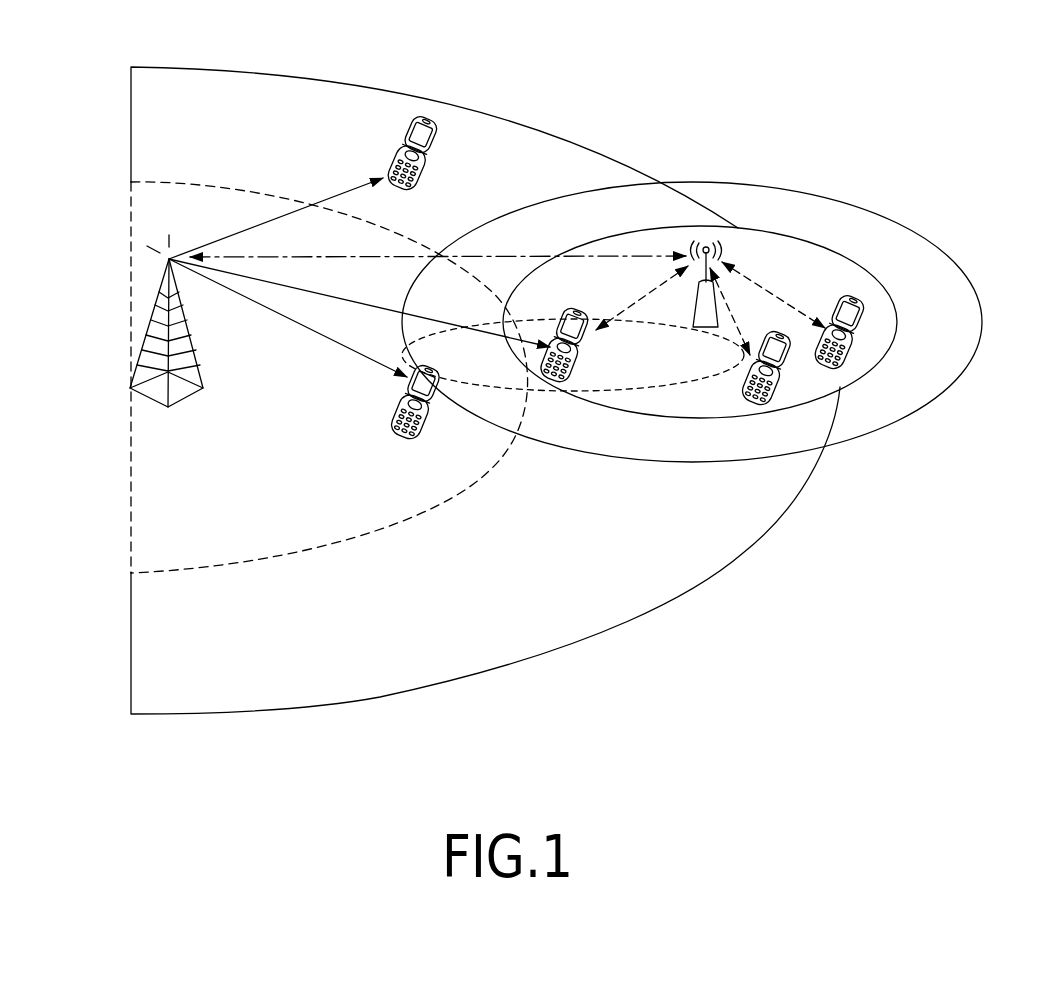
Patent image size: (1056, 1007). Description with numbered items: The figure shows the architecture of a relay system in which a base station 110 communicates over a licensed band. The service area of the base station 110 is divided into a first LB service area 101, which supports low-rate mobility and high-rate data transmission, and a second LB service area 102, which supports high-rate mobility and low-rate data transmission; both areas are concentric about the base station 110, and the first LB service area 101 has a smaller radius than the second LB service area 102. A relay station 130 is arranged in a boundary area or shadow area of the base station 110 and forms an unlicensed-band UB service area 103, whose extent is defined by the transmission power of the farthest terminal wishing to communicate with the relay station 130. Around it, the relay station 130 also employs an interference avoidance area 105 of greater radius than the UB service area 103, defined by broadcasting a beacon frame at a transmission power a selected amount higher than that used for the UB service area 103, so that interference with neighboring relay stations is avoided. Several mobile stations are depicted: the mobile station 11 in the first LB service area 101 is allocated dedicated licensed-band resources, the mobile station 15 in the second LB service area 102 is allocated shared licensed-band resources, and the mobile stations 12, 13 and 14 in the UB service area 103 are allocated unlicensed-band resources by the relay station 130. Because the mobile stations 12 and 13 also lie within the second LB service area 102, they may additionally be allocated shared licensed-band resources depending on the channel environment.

The base station 110 is at (145, 331).
The first LB service area 101 is at (142, 490).
The second LB service area 102 is at (142, 655).
The UB service area 103 is at (639, 227).
The interference avoidance area 105 is at (770, 182).
The relay station 130 is at (706, 330).
The mobile station 11 is at (417, 436).
The mobile station 12 is at (588, 360).
The mobile station 13 is at (770, 385).
The mobile station 14 is at (858, 326).
The mobile station 15 is at (428, 117).